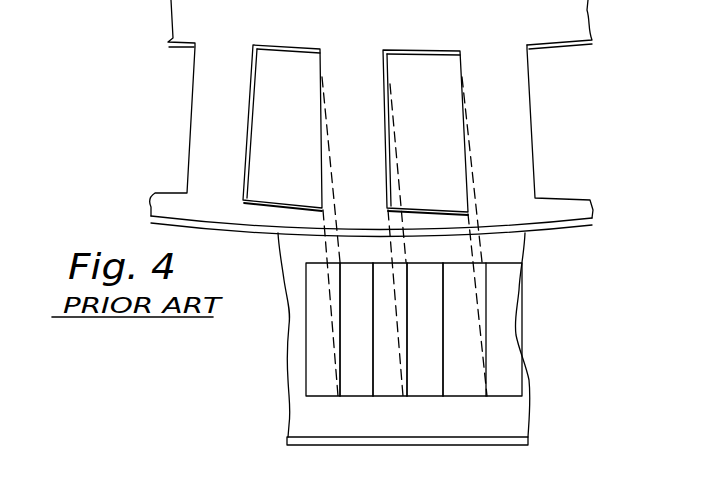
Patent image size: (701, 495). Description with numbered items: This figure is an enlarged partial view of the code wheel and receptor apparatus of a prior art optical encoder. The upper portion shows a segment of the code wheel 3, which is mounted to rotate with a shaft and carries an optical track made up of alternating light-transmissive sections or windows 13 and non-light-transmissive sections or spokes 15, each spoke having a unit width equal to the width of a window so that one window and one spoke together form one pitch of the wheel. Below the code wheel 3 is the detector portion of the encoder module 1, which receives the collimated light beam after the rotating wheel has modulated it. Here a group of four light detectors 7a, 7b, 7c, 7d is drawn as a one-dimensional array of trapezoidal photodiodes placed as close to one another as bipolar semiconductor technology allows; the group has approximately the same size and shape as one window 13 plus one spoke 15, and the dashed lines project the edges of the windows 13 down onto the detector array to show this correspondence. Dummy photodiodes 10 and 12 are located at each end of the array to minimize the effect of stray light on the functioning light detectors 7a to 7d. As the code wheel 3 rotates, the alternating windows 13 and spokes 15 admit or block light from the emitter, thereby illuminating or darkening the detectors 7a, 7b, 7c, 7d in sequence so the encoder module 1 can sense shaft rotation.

The encoder module 1 is at (406, 339).
The code wheel 3 is at (371, 198).
The light detector 7a is at (358, 383).
The light detector 7b is at (383, 396).
The light detector 7c is at (426, 395).
The light detector 7d is at (466, 395).
The dummy photodiode 10 is at (318, 313).
The dummy photodiode 12 is at (508, 363).
The window 13 is at (407, 87).
The spoke 15 is at (498, 72).